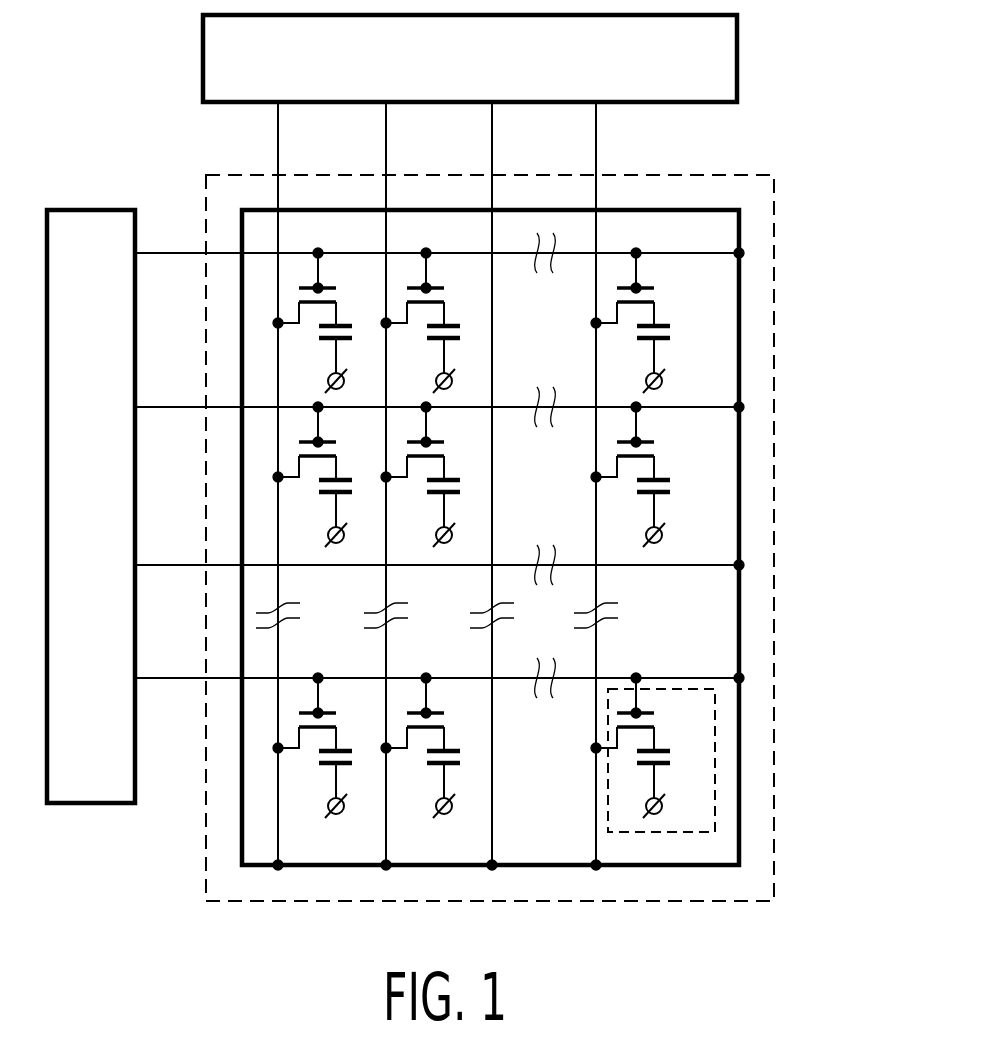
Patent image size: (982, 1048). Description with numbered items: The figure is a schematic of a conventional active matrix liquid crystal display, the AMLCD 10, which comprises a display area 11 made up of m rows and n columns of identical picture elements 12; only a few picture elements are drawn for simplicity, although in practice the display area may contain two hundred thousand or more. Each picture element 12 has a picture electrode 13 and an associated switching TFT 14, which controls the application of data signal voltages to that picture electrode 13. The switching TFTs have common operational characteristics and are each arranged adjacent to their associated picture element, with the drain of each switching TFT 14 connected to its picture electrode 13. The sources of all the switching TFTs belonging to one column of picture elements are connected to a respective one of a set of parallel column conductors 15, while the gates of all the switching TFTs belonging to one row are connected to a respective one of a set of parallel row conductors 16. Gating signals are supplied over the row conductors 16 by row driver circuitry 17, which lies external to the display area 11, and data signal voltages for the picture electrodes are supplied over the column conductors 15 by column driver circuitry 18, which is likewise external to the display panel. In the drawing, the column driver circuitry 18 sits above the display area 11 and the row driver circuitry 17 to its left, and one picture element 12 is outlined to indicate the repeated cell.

The AMLCD 10 is at (806, 146).
The display area 11 is at (775, 550).
The picture element 12 is at (715, 798).
The picture electrode 13 is at (453, 330).
The switching TFT 14 is at (638, 292).
The column conductor 15 is at (278, 152).
The row conductor 16 is at (168, 252).
The row driver circuitry 17 is at (107, 512).
The column driver circuitry 18 is at (483, 76).